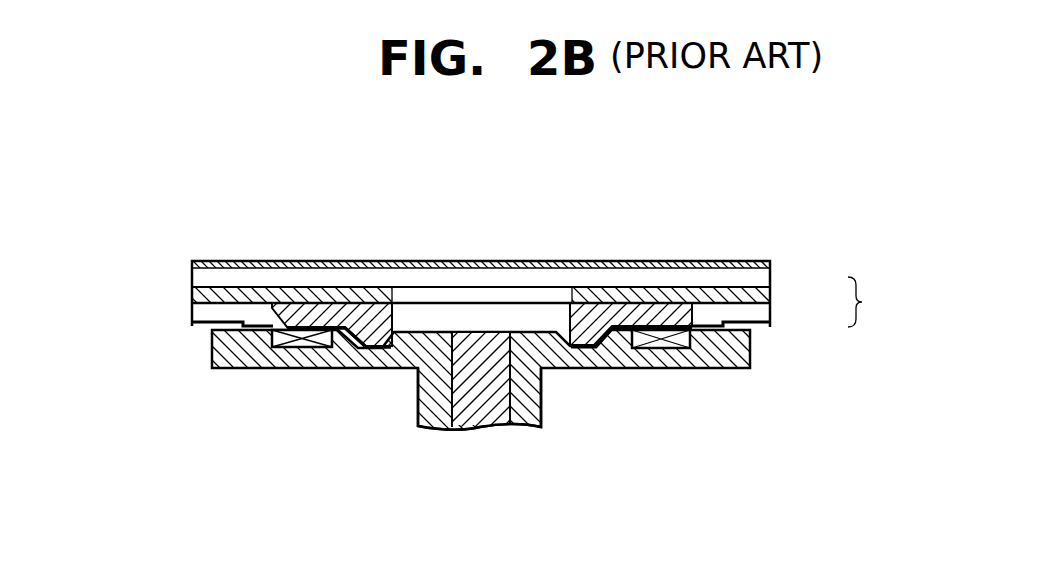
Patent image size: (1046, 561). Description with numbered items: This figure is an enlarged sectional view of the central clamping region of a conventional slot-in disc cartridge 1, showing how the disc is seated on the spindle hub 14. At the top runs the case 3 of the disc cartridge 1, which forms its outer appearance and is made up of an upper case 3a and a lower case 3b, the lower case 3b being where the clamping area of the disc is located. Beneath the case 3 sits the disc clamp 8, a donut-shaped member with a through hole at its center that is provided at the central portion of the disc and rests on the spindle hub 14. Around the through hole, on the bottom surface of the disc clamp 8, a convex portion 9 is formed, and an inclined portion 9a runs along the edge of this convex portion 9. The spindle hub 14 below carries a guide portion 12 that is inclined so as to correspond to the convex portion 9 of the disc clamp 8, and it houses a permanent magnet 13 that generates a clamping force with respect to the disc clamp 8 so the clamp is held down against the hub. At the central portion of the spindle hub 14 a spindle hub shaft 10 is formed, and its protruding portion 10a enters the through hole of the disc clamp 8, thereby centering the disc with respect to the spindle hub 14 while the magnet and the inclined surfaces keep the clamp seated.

The disc cartridge 1 is at (743, 260).
The case 3 is at (868, 302).
The upper case 3a is at (770, 266).
The lower case 3b is at (770, 327).
The disc clamp 8 is at (598, 305).
The convex portion 9 is at (583, 349).
The inclined portion 9a is at (374, 327).
The spindle hub shaft 10 is at (478, 430).
The protruding portion 10a is at (518, 332).
The guide portion 12 is at (606, 350).
The permanent magnet 13 is at (670, 349).
The spindle hub 14 is at (398, 391).